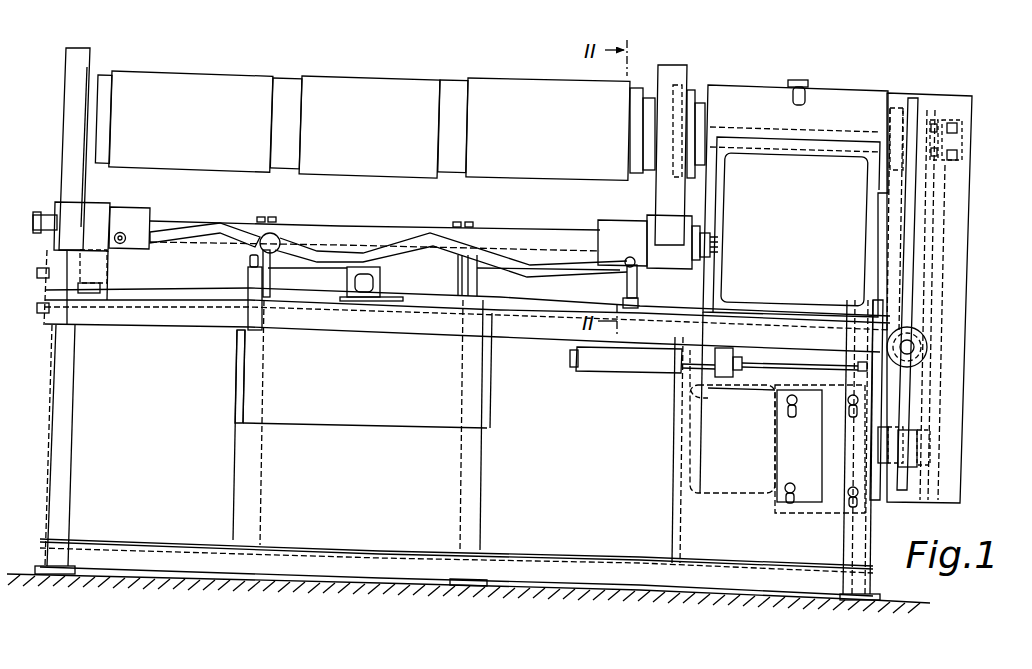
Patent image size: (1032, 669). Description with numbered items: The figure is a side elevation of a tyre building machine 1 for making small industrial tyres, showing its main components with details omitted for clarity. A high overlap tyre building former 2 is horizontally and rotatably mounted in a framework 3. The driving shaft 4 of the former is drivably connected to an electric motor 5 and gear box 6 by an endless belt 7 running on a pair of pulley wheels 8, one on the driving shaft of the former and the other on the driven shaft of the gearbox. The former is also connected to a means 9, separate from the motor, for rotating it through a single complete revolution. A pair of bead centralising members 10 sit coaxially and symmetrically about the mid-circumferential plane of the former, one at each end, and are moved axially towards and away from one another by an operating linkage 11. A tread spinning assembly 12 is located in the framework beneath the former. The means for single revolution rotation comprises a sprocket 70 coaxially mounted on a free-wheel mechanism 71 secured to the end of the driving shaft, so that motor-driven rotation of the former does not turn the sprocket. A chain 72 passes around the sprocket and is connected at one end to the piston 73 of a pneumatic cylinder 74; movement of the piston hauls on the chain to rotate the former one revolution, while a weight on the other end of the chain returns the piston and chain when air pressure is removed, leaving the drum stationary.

The tyre building machine 1 is at (476, 76).
The high overlap tyre building former 2 is at (266, 73).
The framework 3 is at (906, 92).
The driving shaft 4 is at (848, 128).
The electric motor 5 is at (723, 487).
The gear box 6 is at (920, 109).
The endless belt 7 is at (905, 228).
The pulley wheels 8 is at (913, 417).
The means for rotating the former for a single complete revolution 9 is at (939, 202).
The bead centralising members 10 is at (80, 62).
The operating linkage 11 is at (430, 250).
The tread spinning assembly 12 is at (235, 367).
The sprocket 70 is at (937, 123).
The free-wheel mechanism 71 is at (965, 126).
The chain 72 is at (935, 250).
The piston 73 is at (695, 381).
The pneumatic cylinder 74 is at (640, 373).